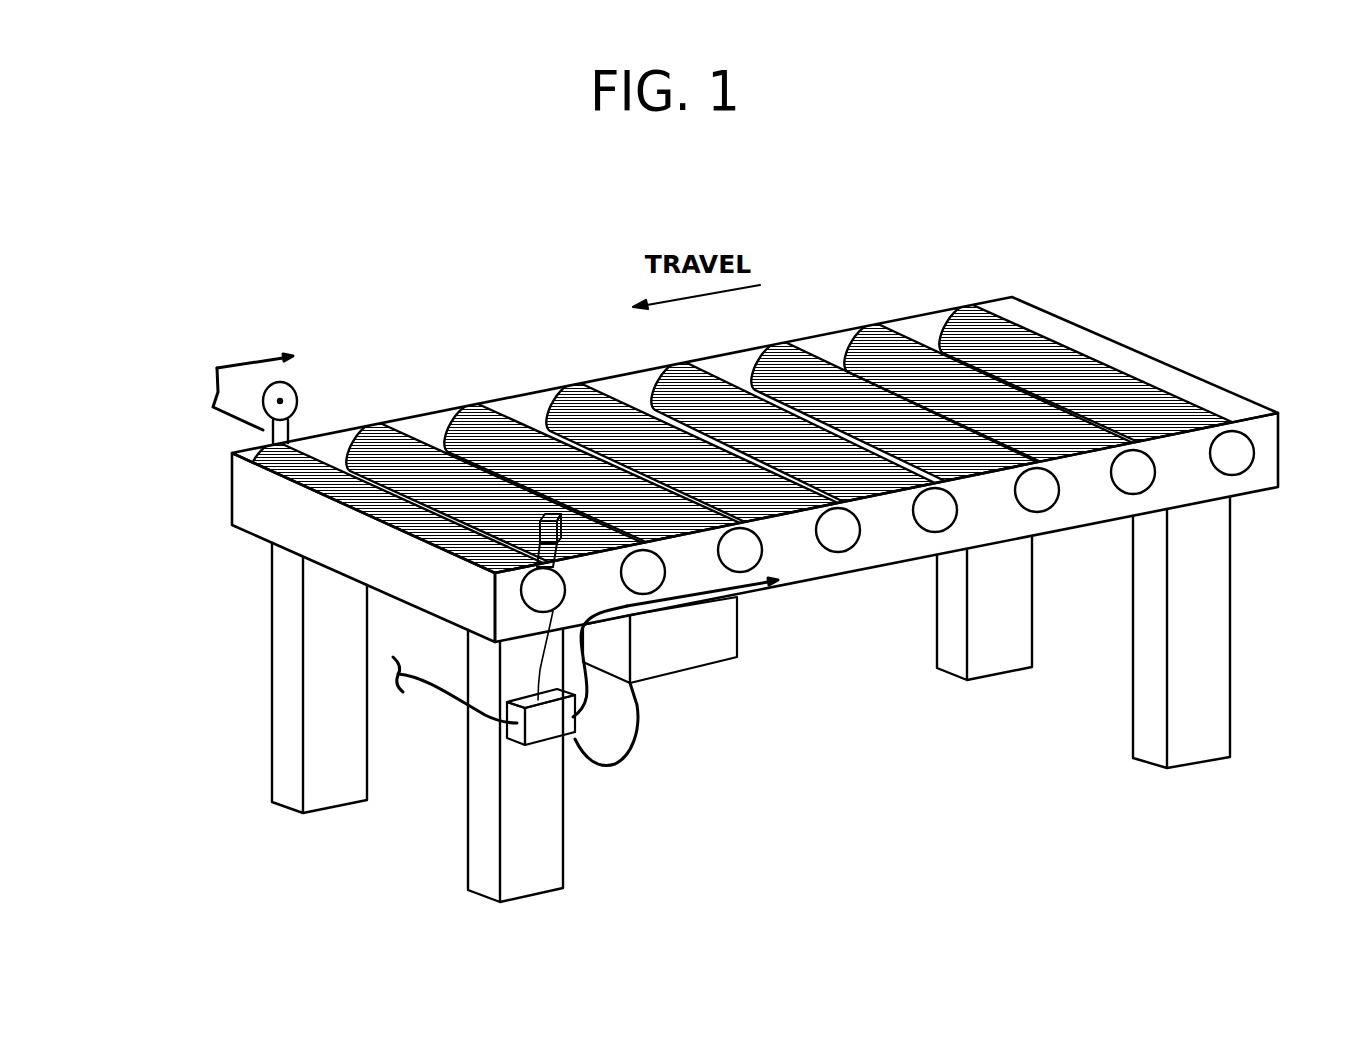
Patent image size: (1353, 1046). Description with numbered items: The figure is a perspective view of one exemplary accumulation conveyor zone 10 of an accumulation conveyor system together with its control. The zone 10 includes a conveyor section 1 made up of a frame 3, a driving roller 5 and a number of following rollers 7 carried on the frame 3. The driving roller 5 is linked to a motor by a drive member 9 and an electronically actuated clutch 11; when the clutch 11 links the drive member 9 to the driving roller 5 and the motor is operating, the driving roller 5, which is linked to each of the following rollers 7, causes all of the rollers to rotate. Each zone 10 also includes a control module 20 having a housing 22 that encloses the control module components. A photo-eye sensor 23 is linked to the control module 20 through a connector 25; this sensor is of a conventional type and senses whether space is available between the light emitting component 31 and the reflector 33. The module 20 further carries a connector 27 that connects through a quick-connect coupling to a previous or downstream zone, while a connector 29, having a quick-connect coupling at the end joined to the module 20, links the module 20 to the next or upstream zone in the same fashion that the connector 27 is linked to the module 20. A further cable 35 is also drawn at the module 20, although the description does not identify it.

The conveyor section 1 is at (1162, 311).
The frame 3 is at (1255, 532).
The driving roller 5 is at (378, 423).
The following rollers 7 is at (468, 403).
The drive member 9 is at (228, 348).
The accumulation conveyor zone 10 is at (1058, 270).
The electronically actuated clutch 11 is at (704, 660).
The control module 20 is at (560, 772).
The housing 22 is at (528, 747).
The photo-eye sensor 23 is at (591, 579).
The connector 25 is at (560, 674).
The connector 27 is at (430, 693).
The connector 29 is at (773, 590).
The light emitting component 31 is at (537, 533).
The reflector 33 is at (297, 388).
The connecting cable 35 is at (633, 748).